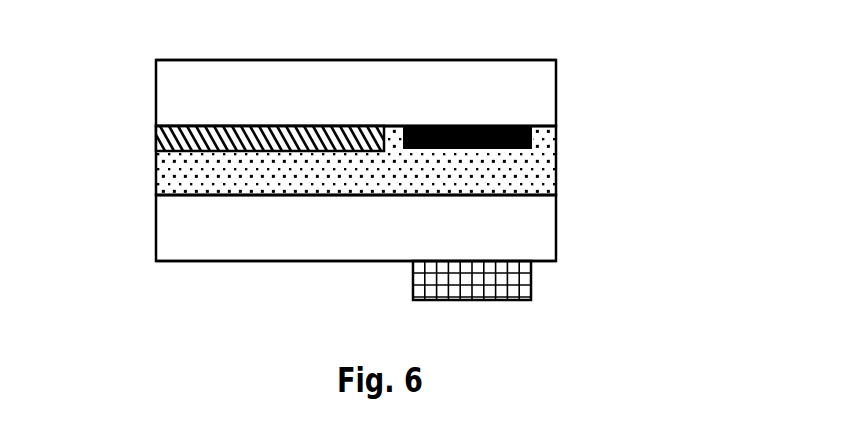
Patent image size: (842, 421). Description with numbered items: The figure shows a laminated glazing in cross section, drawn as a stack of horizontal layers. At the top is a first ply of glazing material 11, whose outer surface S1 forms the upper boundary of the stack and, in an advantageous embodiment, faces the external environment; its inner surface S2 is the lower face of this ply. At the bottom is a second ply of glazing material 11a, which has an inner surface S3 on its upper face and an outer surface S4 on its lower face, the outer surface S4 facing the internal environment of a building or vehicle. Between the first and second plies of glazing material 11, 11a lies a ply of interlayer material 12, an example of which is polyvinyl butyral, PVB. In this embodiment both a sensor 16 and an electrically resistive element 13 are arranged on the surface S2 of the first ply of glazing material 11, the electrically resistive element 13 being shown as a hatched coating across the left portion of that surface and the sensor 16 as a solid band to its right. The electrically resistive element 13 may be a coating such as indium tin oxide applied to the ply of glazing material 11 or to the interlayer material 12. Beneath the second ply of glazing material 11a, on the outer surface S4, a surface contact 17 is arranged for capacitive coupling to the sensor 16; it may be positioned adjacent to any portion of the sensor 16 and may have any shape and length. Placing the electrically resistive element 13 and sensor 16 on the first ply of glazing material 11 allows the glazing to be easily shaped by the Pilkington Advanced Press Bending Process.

The first ply of glazing material 11 is at (568, 85).
The second ply of glazing material 11a is at (568, 233).
The ply of interlayer material 12 is at (568, 180).
The electrically resistive element 13 is at (144, 146).
The sensor 16 is at (544, 138).
The surface contact 17 is at (544, 285).
The outer surface S1 is at (147, 52).
The inner surface S2 is at (147, 118).
The inner surface S3 is at (146, 202).
The outer surface S4 is at (145, 266).